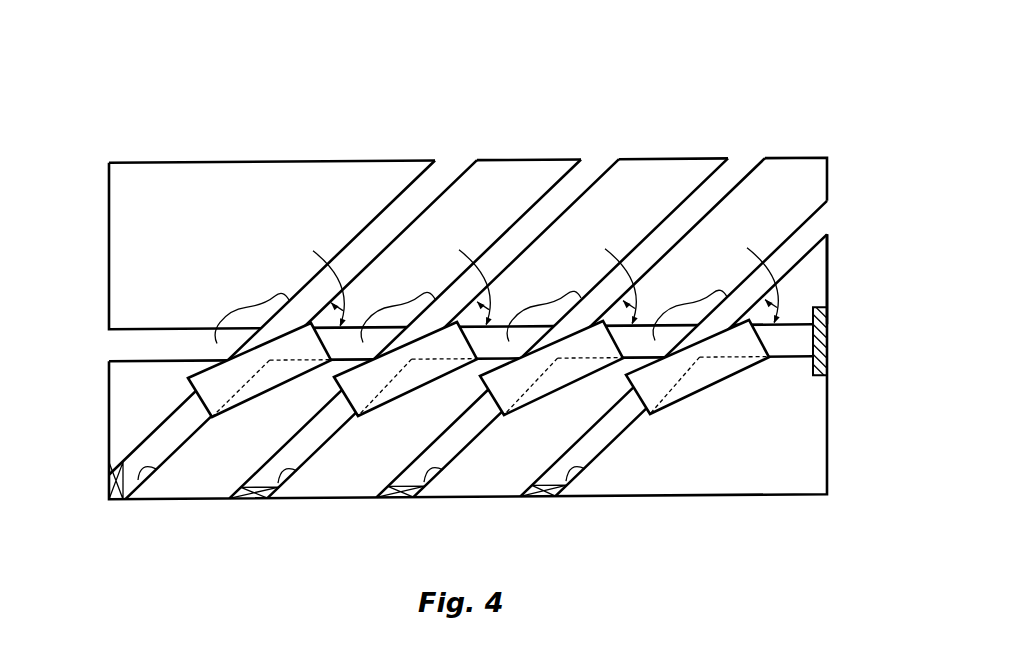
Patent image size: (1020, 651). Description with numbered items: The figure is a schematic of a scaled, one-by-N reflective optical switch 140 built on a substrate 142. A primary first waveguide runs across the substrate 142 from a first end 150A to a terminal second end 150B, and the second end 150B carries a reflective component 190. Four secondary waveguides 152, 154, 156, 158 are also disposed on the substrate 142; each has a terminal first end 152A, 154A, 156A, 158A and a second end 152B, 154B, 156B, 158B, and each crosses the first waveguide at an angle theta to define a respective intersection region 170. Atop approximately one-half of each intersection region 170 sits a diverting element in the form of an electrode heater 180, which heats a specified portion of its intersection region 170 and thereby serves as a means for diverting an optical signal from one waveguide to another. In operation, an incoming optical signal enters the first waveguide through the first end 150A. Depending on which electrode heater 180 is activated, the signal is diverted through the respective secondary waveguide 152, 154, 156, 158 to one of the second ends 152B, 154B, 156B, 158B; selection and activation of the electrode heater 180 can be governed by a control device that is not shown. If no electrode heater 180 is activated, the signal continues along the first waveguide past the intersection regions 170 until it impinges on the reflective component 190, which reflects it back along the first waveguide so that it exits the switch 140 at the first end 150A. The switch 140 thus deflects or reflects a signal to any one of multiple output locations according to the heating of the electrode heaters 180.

The 1×N reflective optical switch 140 is at (101, 151).
The substrate 142 is at (233, 224).
The first end of first waveguide 150A is at (112, 335).
The terminal second end of first waveguide 150B is at (827, 346).
The secondary waveguide 152 is at (377, 219).
The secondary waveguide 154 is at (520, 222).
The secondary waveguide 156 is at (667, 222).
The secondary waveguide 158 is at (797, 235).
The terminal first end of secondary waveguide 152A is at (137, 484).
The terminal first end of secondary waveguide 154A is at (283, 475).
The terminal first end of secondary waveguide 156A is at (429, 476).
The terminal first end of secondary waveguide 158A is at (575, 477).
The second end of secondary waveguide 152B is at (438, 165).
The second end of secondary waveguide 154B is at (584, 166).
The second end of secondary waveguide 156B is at (730, 167).
The second end of secondary waveguide 158B is at (823, 213).
The intersection region 170 is at (471, 312).
The electrode heater 180 is at (492, 382).
The reflective component 190 is at (827, 326).